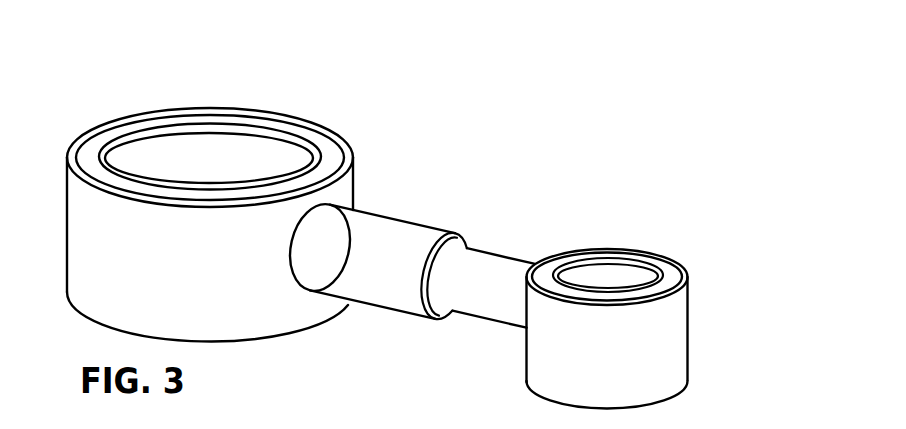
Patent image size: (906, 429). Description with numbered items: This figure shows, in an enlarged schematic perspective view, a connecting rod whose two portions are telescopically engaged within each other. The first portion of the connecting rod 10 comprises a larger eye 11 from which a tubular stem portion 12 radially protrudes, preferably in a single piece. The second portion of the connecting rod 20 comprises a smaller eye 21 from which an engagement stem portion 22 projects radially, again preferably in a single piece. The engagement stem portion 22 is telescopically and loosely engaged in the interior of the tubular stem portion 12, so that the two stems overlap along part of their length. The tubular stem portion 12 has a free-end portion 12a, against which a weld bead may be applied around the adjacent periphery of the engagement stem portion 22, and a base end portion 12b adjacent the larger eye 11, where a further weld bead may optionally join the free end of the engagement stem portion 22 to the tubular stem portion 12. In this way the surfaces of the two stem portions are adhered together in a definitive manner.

The first portion of the connecting rod 10 is at (376, 182).
The larger eye 11 is at (157, 153).
The tubular stem portion 12 is at (395, 212).
The free-end portion of the tubular stem portion 12a is at (455, 318).
The base end portion of the tubular stem portion 12b is at (306, 254).
The second portion of the connecting rod 20 is at (500, 347).
The smaller eye 21 is at (631, 278).
The engagement stem portion 22 is at (497, 249).